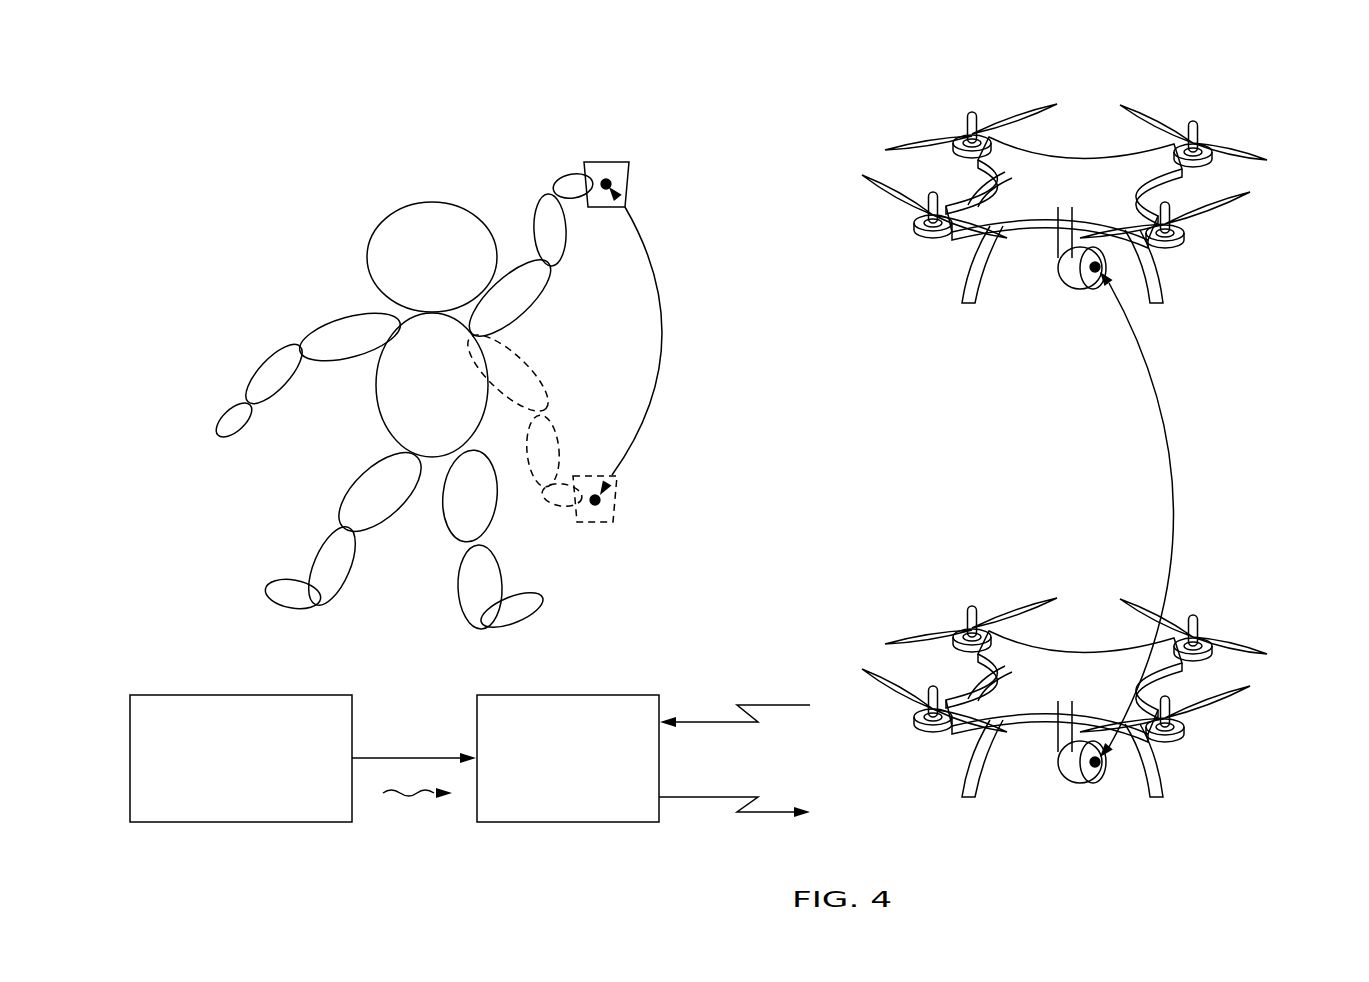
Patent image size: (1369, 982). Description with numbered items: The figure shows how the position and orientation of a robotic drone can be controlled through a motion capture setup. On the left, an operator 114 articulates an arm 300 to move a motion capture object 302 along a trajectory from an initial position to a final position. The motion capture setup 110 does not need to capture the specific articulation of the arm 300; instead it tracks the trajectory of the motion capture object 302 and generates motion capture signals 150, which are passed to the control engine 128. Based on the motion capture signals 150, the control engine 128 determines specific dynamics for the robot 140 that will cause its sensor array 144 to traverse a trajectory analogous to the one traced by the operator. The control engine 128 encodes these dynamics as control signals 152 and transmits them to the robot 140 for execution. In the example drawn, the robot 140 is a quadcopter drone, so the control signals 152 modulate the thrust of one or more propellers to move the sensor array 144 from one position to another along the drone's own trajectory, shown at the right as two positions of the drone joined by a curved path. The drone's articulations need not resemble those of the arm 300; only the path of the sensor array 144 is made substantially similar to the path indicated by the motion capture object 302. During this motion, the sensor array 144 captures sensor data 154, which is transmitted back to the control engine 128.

The operator 114 is at (388, 210).
The arm 300 is at (546, 196).
The motion capture object 302 is at (606, 162).
The robot 140 is at (1283, 108).
The sensor array 144 is at (1107, 262).
The motion capture setup 110 is at (257, 796).
The control engine 128 is at (584, 796).
The motion capture signals 150 is at (422, 833).
The control signals 152 is at (772, 851).
The sensor data 154 is at (772, 688).